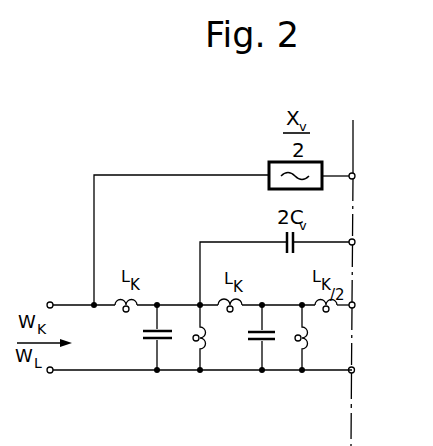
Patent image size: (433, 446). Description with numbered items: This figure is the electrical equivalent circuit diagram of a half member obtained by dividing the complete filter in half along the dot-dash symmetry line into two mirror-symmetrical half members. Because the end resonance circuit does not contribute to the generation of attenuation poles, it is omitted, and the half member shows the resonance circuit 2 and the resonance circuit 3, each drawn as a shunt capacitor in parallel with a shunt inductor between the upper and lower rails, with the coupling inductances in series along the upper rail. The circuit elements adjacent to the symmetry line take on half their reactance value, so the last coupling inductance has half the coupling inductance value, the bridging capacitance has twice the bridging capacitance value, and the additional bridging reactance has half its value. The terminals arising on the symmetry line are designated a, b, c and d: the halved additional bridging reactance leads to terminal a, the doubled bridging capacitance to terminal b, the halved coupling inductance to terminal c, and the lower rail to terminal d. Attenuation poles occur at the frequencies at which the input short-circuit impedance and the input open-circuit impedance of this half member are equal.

The resonance circuit 2 is at (174, 337).
The resonance circuit 3 is at (278, 337).
The terminal a is at (358, 176).
The terminal b is at (358, 242).
The terminal c is at (358, 305).
The terminal d is at (359, 370).